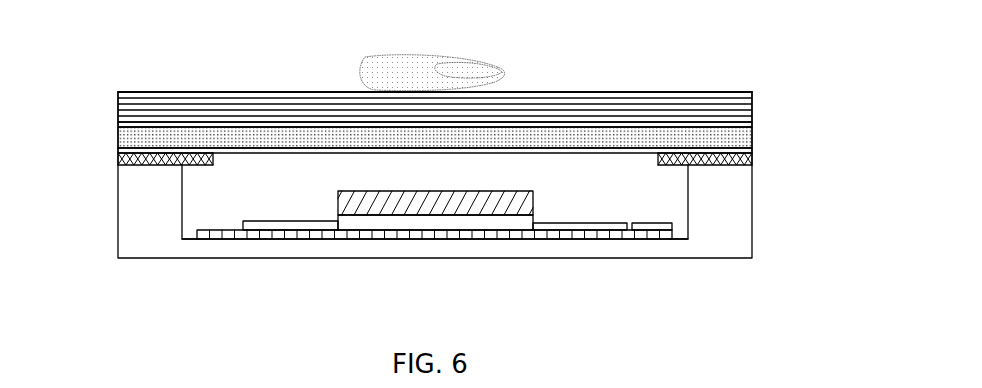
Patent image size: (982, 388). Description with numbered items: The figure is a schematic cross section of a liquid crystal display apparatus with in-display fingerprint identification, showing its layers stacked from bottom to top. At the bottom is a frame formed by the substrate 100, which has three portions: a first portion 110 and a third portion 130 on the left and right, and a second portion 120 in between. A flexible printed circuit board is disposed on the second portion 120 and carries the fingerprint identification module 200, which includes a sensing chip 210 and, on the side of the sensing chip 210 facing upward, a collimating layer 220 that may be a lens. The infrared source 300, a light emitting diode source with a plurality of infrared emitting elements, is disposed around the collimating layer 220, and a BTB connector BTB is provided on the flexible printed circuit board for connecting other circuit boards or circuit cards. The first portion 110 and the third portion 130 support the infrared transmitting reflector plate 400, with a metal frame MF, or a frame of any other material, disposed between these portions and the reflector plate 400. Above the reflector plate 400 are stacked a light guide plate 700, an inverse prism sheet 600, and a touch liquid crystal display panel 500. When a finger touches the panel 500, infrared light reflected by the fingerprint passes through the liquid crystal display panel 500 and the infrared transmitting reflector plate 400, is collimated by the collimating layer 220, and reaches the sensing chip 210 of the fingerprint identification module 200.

The substrate 100 is at (755, 215).
The first portion 110 is at (147, 228).
The second portion 120 is at (315, 246).
The third portion 130 is at (723, 232).
The fingerprint identification module 200 is at (434, 239).
The sensing chip 210 is at (375, 222).
The collimating layer 220 is at (467, 205).
The infrared source 300 is at (252, 225).
The infrared transmitting reflector plate 400 is at (753, 153).
The touch liquid crystal display panel 500 is at (607, 98).
The inverse prism sheet 600 is at (260, 128).
The light guide plate 700 is at (125, 138).
The metal frame MF is at (120, 158).
The BTB connector BTB is at (642, 227).